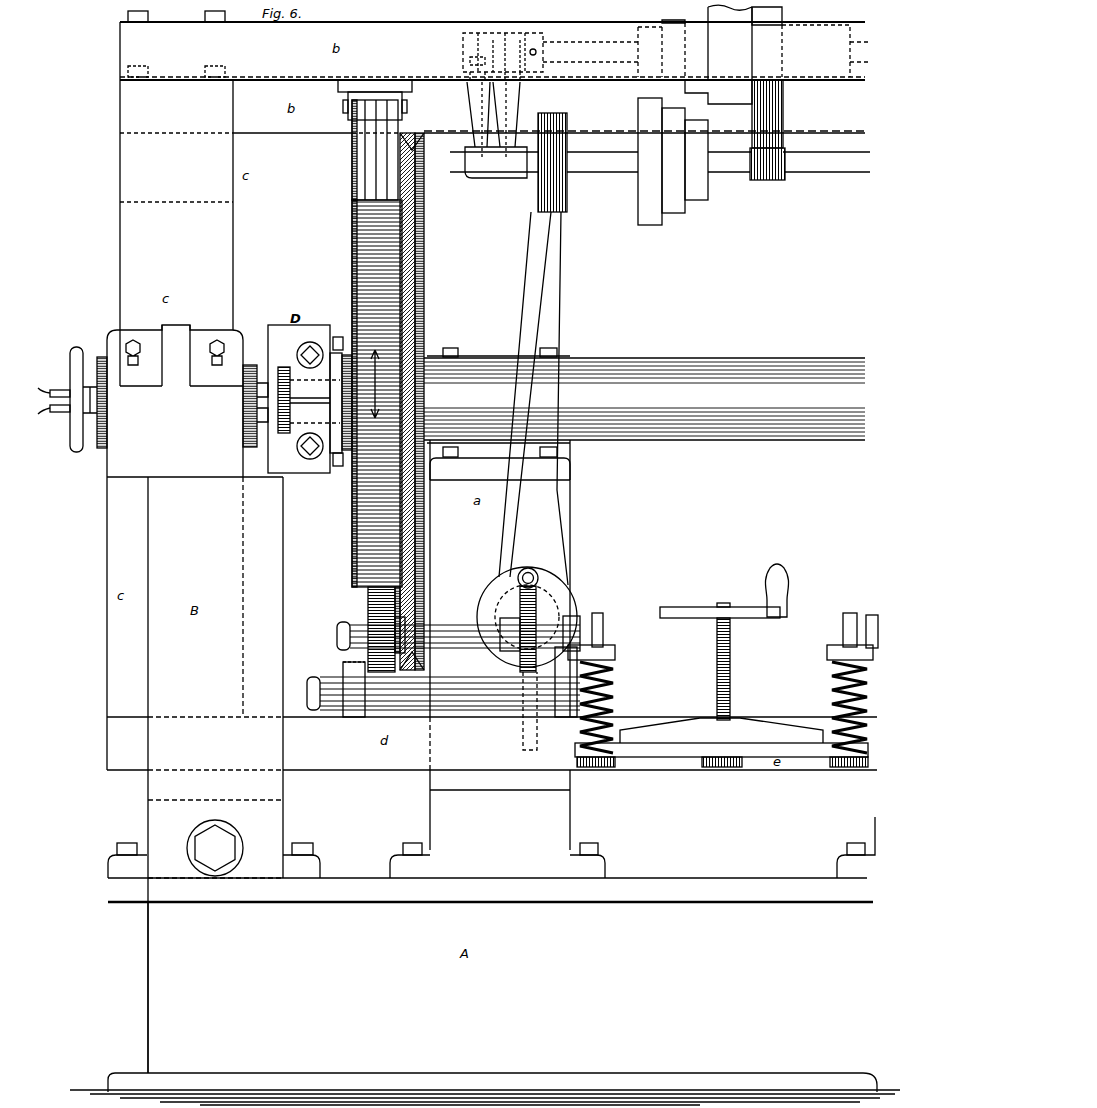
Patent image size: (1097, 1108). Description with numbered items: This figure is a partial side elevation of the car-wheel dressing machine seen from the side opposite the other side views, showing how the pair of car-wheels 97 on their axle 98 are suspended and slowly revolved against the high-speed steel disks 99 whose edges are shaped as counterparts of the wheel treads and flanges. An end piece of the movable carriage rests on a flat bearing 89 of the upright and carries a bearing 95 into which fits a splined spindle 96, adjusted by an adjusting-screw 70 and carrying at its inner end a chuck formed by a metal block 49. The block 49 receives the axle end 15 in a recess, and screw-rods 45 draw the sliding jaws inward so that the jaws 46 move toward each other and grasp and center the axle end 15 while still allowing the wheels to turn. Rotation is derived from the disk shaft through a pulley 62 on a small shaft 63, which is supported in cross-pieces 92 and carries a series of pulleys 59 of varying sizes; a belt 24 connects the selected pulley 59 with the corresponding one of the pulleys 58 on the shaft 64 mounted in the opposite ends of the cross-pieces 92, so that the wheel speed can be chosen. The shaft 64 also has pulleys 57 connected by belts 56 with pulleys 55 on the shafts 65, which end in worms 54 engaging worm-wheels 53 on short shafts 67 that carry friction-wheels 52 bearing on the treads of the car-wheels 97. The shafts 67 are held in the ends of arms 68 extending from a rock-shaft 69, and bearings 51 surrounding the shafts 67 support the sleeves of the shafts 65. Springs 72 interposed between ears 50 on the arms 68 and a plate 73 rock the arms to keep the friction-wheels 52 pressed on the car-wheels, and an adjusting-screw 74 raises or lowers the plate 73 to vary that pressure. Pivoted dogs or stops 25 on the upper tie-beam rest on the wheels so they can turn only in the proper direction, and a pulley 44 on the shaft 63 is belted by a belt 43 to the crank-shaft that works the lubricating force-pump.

The small shaft 63 is at (566, 46).
The pulleys 59 is at (683, 21).
The pulley 44 is at (825, 30).
The cross-pieces 92 is at (512, 100).
The pulley 62 is at (718, 54).
The pulleys 58 is at (643, 118).
The belt 24 is at (778, 127).
The shaft 64 is at (637, 168).
The pulleys 57 is at (567, 196).
The pivoted dogs or stops 25 is at (366, 177).
The steel disks 99 is at (425, 170).
The spindles 96 is at (257, 363).
The metal blocks 49 is at (310, 399).
The screw-rods 45 is at (311, 352).
The belt 43 is at (309, 457).
The jaws 46 is at (315, 401).
The axle ends 15 is at (282, 400).
The bearings 95 is at (175, 401).
The adjusting-screws 70 is at (78, 448).
The flat bearing 89 is at (268, 478).
The car-wheels 97 is at (377, 393).
The belts 56 is at (562, 318).
The axle 98 is at (650, 360).
The shafts 65 is at (529, 568).
The worms 54 is at (536, 574).
The bearings 51 is at (512, 596).
The pulleys 55 is at (573, 605).
The short shafts 67 is at (449, 625).
The friction-wheels 52 is at (384, 629).
The arms 68 is at (352, 660).
The worm-wheels 53 is at (515, 660).
The rock-shaft 69 is at (443, 693).
The ears 50 is at (612, 648).
The springs 72 is at (615, 696).
The adjusting-screw 74 is at (733, 696).
The plate 73 is at (684, 746).